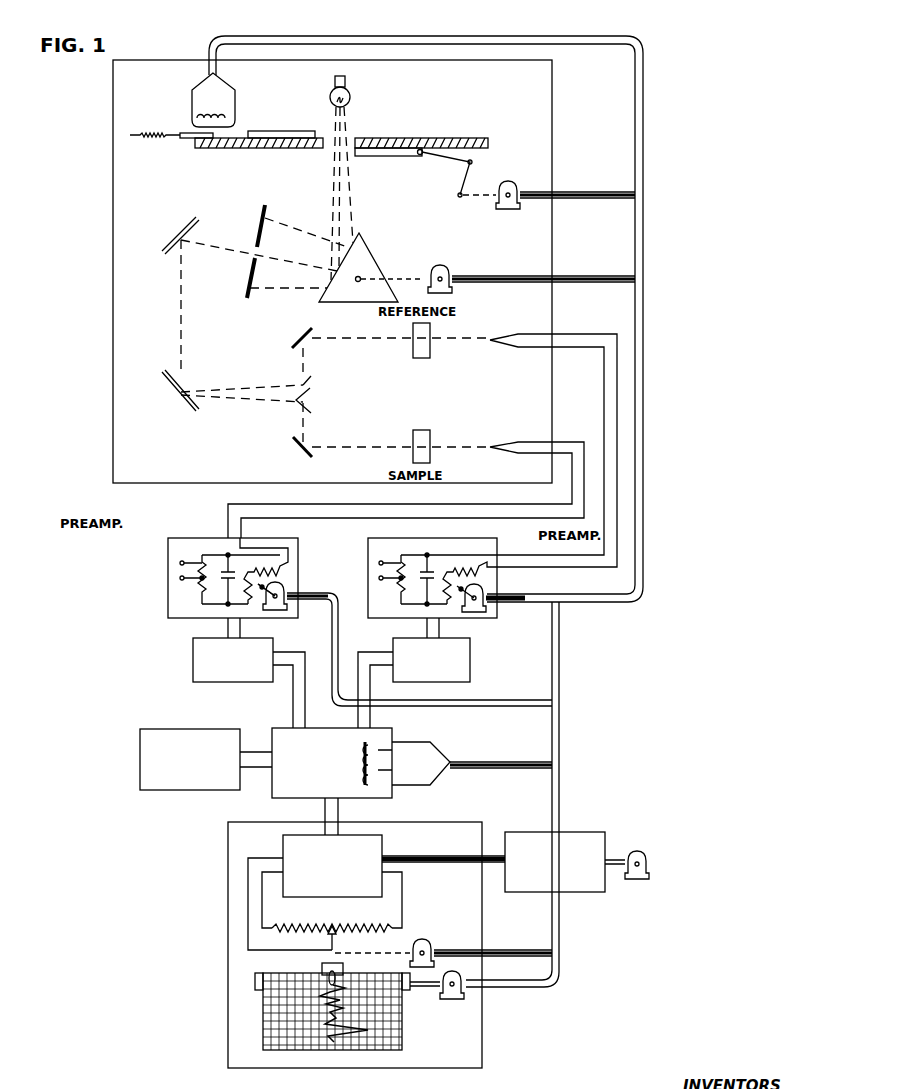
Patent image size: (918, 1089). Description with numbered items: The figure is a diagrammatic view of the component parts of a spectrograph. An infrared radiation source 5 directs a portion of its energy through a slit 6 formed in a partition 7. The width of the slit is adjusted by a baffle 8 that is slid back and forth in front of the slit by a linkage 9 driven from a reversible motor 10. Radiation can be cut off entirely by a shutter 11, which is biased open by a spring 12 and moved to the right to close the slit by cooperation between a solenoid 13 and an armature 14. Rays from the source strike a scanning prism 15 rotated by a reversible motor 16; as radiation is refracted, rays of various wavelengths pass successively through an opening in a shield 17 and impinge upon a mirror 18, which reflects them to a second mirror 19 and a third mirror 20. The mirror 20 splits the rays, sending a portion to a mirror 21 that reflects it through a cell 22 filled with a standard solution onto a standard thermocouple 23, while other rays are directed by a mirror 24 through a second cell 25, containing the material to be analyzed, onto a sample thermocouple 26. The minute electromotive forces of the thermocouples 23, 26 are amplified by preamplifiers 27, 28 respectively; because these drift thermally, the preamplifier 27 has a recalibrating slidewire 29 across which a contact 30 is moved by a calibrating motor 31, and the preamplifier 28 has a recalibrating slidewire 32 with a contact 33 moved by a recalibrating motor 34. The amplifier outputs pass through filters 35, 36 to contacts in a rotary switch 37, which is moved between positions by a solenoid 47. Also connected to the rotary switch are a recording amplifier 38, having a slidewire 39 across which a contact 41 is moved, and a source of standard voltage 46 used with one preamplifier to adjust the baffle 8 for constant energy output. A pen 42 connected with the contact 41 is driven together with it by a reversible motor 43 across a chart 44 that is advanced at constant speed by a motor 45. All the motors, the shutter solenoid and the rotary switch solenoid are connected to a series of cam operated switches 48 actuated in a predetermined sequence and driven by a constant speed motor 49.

The infrared radiation source 5 is at (349, 92).
The slit 6 is at (350, 142).
The partition 7 is at (404, 138).
The baffle 8 is at (387, 156).
The linkage 9 is at (472, 170).
The reversible motor 10 is at (512, 186).
The shutter 11 is at (283, 131).
The spring 12 is at (158, 138).
The solenoid 13 is at (218, 114).
The armature 14 is at (188, 131).
The scanning prism 15 is at (372, 251).
The reversible motor 16 is at (447, 268).
The shield 17 is at (262, 217).
The mirror 18 is at (178, 226).
The second mirror 19 is at (170, 397).
The third mirror 20 is at (312, 382).
The mirror 21 is at (295, 335).
The cell 22 is at (425, 350).
The standard thermocouple 23 is at (505, 338).
The mirror 24 is at (294, 453).
The second cell 25 is at (428, 438).
The sample thermocouple 26 is at (497, 441).
The preamplifier 27 is at (497, 546).
The preamplifier 28 is at (168, 540).
The recalibrating slidewire 29 is at (437, 567).
The contact 30 is at (478, 592).
The calibrating motor 31 is at (487, 609).
The recalibrating slidewire 32 is at (241, 567).
The contact 33 is at (278, 590).
The recalibrating motor 34 is at (288, 603).
The filter 35 is at (472, 660).
The filter 36 is at (193, 658).
The rotary switch 37 is at (282, 728).
The amplifier 38 is at (283, 842).
The slidewire 39 is at (332, 926).
The contact 41 is at (329, 945).
The pen 42 is at (322, 965).
The reversible motor 43 is at (426, 942).
The chart 44 is at (278, 1018).
The motor 45 is at (457, 996).
The source of standard voltage 46 is at (140, 753).
The solenoid 47 is at (386, 764).
The cam operated switches 48 is at (586, 832).
The constant speed motor 49 is at (650, 860).